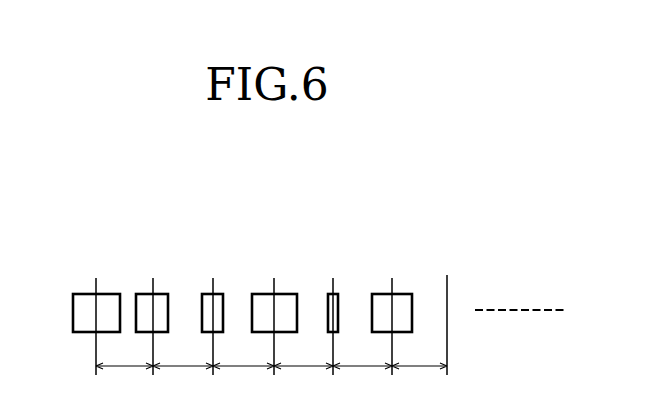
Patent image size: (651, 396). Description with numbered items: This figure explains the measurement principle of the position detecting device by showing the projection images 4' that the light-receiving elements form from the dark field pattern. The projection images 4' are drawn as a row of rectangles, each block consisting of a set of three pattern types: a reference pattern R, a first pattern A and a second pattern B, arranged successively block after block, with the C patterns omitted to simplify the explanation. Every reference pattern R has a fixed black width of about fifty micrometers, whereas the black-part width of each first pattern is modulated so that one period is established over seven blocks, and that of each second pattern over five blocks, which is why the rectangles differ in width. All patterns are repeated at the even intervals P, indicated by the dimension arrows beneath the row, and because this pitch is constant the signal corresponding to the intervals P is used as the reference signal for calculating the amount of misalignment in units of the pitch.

The projection images 4' is at (436, 255).
The reference pattern R is at (185, 311).
The even intervals P is at (271, 379).